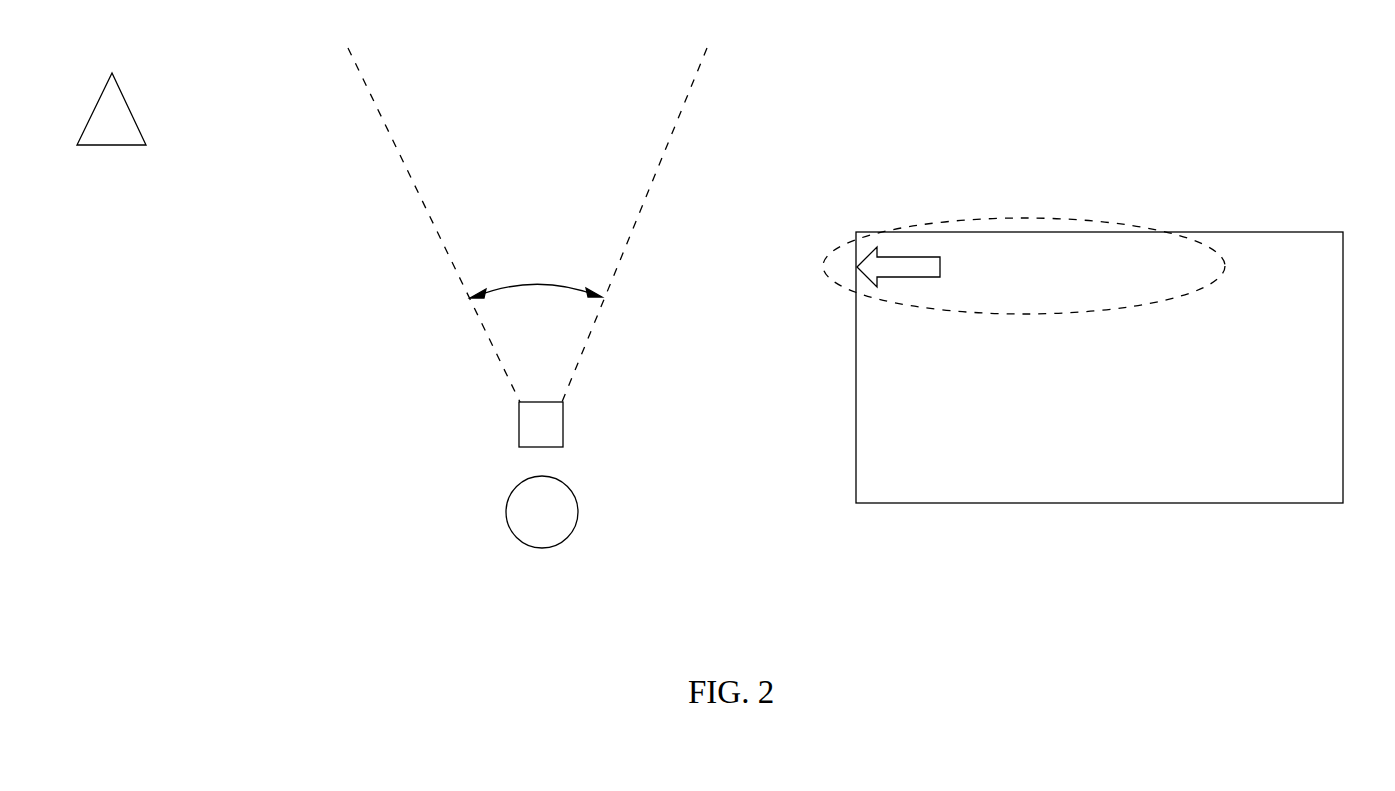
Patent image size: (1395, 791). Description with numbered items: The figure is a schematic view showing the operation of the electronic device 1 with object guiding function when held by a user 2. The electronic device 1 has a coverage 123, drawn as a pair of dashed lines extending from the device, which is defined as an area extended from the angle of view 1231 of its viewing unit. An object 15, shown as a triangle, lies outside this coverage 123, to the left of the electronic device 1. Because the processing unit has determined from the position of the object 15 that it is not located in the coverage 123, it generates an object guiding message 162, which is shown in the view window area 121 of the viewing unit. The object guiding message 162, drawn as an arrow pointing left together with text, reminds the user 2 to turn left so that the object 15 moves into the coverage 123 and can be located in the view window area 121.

The object 15 is at (118, 105).
The coverage 123 is at (551, 33).
The angle of view 1231 is at (568, 261).
The electronic device 1 is at (519, 423).
The user 2 is at (578, 508).
The view window area 121 is at (1293, 232).
The object guiding message 162 is at (1021, 219).